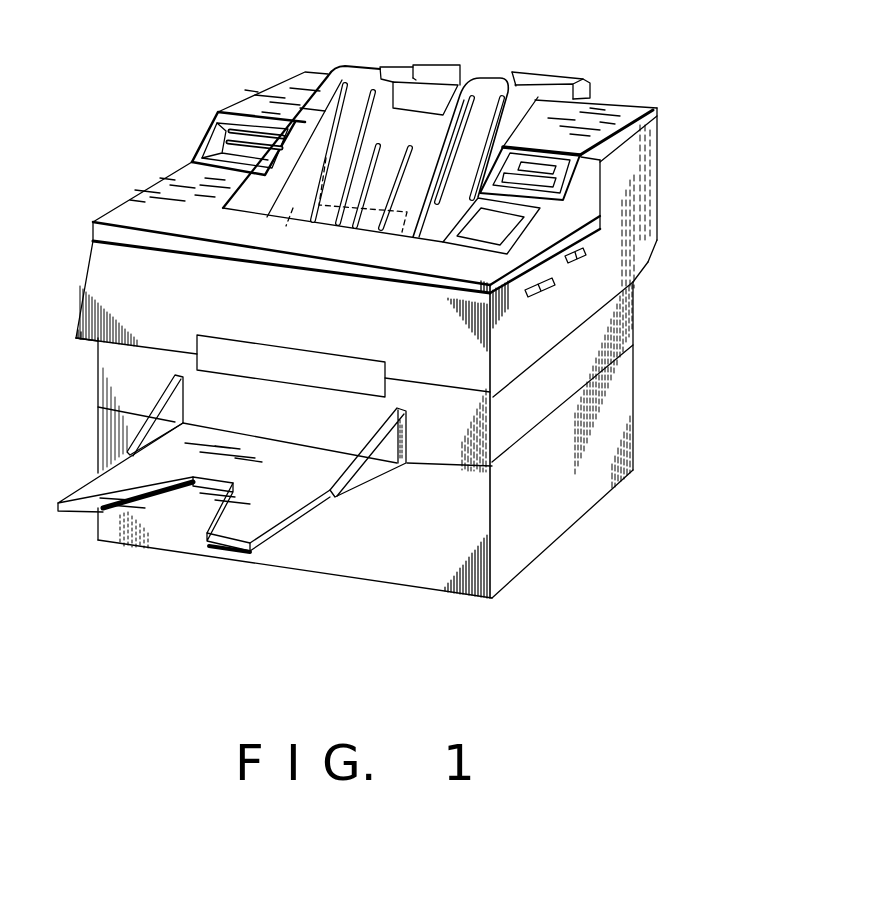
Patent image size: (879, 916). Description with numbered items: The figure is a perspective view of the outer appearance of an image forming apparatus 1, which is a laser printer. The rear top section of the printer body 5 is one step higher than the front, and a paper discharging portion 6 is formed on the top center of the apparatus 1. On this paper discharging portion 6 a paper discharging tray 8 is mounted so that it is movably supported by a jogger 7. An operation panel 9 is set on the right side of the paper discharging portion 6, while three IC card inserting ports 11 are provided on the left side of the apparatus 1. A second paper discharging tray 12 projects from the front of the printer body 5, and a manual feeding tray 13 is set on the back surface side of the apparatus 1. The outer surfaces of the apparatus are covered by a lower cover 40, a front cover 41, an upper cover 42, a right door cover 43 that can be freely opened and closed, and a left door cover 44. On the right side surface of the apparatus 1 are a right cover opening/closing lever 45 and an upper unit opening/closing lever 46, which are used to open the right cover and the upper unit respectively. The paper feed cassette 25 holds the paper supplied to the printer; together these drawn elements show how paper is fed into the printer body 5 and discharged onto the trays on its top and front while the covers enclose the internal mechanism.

The image forming apparatus 1 is at (662, 220).
The printer body 5 is at (650, 237).
The paper discharging portion 6 is at (416, 185).
The jogger 7 is at (359, 176).
The paper discharging tray 8 is at (487, 83).
The operation panel 9 is at (558, 213).
The IC card inserting ports 11 is at (237, 118).
The paper discharging tray 12 is at (90, 513).
The manual feeding tray 13 is at (545, 72).
The paper feed cassette 25 is at (403, 450).
The lower cover 40 is at (622, 337).
The front cover 41 is at (80, 347).
The upper cover 42 is at (610, 100).
The right door cover 43 is at (642, 258).
The left door cover 44 is at (83, 289).
The right cover opening/closing lever 45 is at (577, 262).
The upper unit opening/closing lever 46 is at (532, 298).